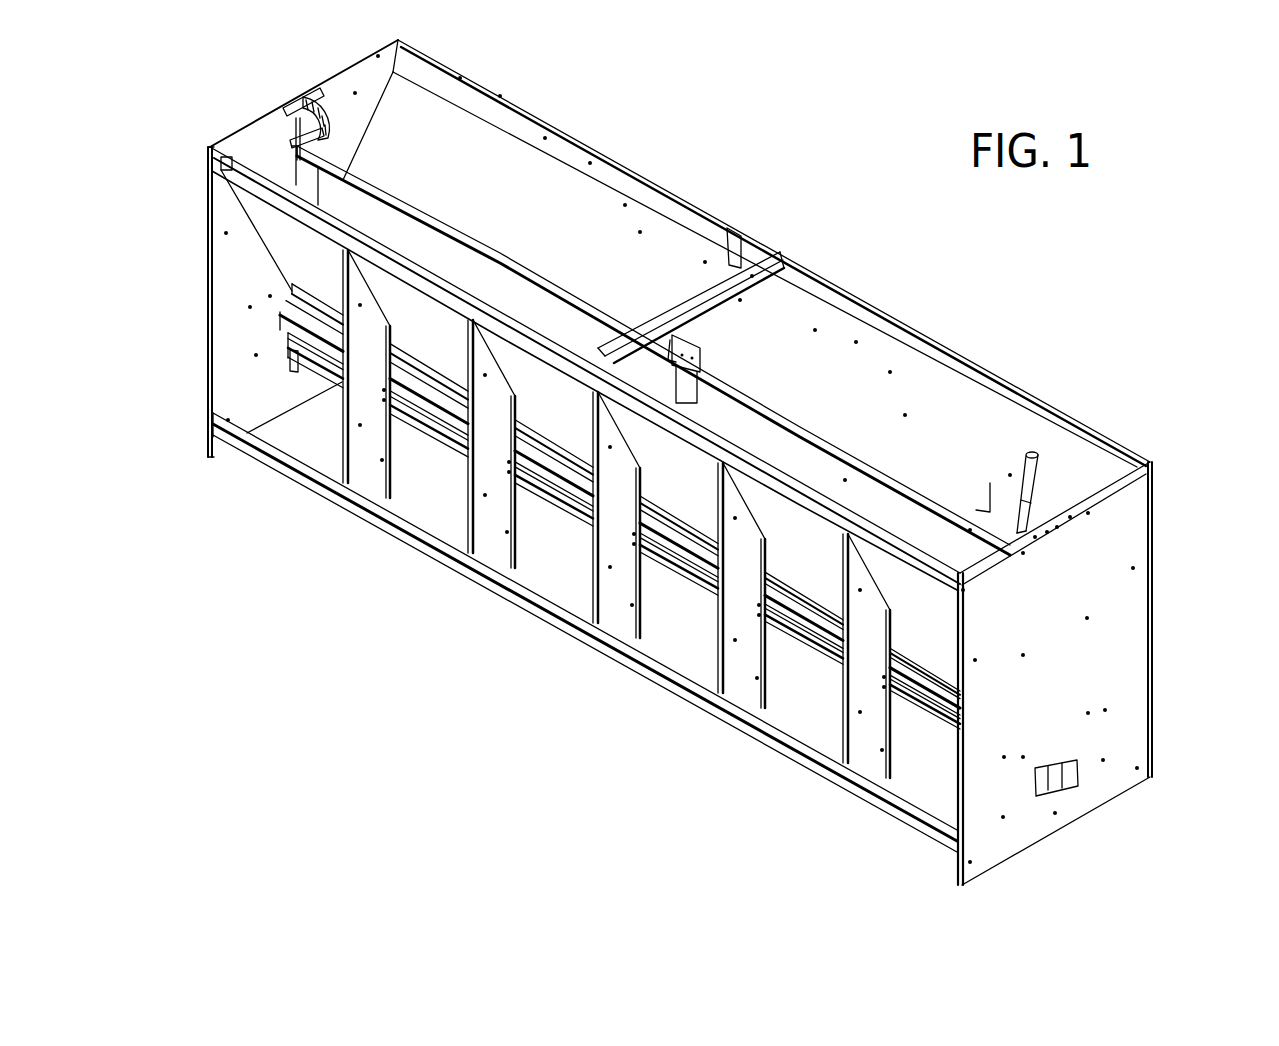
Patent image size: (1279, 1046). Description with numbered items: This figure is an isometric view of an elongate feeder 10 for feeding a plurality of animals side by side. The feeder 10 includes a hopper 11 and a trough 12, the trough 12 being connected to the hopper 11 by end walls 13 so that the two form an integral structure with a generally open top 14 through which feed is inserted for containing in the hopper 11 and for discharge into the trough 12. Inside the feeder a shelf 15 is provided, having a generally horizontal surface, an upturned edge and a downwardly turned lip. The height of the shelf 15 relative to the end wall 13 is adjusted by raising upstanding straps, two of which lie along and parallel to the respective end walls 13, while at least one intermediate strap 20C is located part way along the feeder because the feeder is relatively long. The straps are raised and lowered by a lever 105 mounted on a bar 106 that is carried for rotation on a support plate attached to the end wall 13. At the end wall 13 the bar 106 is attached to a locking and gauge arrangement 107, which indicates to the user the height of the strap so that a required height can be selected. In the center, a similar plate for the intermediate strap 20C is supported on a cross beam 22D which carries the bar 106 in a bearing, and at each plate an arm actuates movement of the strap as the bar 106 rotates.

The feeder 10 is at (1173, 513).
The hopper 11 is at (935, 398).
The trough 12 is at (906, 785).
The end wall 13 is at (228, 297).
The open top 14 is at (1040, 617).
The shelf 15 is at (812, 633).
The intermediate strap 20C is at (706, 382).
The cross beam 22D is at (736, 268).
The lever 105 is at (1040, 470).
The bar 106 is at (480, 238).
The locking and gauge arrangement 107 is at (988, 508).